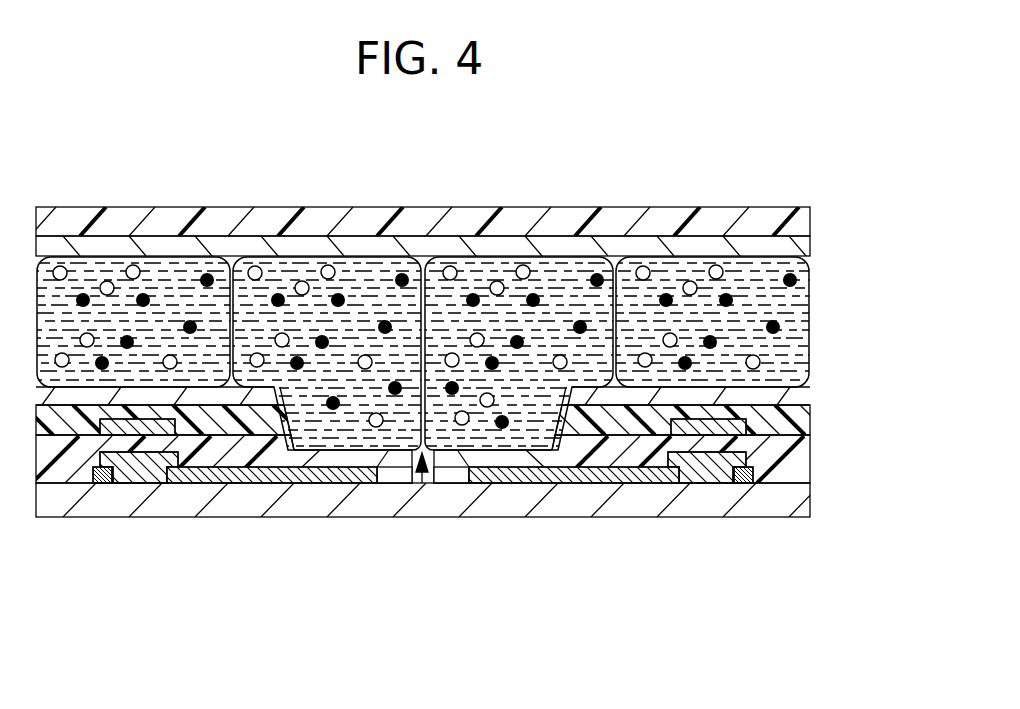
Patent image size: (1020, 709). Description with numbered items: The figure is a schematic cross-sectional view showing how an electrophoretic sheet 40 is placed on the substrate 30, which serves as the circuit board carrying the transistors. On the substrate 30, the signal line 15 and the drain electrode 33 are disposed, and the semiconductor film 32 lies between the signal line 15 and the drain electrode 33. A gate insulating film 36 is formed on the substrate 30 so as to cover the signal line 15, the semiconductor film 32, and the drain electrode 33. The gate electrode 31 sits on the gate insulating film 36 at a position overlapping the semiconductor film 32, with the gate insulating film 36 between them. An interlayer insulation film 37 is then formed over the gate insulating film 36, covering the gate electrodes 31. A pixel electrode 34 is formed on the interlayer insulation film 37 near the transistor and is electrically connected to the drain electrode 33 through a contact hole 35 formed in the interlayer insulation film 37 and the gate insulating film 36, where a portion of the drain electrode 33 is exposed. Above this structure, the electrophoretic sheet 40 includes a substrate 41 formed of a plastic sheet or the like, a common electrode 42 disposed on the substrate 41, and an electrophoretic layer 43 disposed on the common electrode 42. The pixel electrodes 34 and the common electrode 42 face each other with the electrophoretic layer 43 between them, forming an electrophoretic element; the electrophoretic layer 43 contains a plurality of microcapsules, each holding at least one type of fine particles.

The signal line 15 is at (99, 482).
The substrate 30 is at (797, 498).
The gate electrode 31 is at (120, 428).
The semiconductor film 32 is at (143, 474).
The drain electrode 33 is at (315, 471).
The pixel electrode 34 is at (229, 396).
The contact hole 35 is at (422, 483).
The gate insulating film 36 is at (797, 461).
The interlayer insulation film 37 is at (797, 422).
The electrophoretic sheet 40 is at (481, 327).
The substrate 41 is at (795, 221).
The common electrode 42 is at (793, 243).
The electrophoretic layer 43 is at (455, 353).